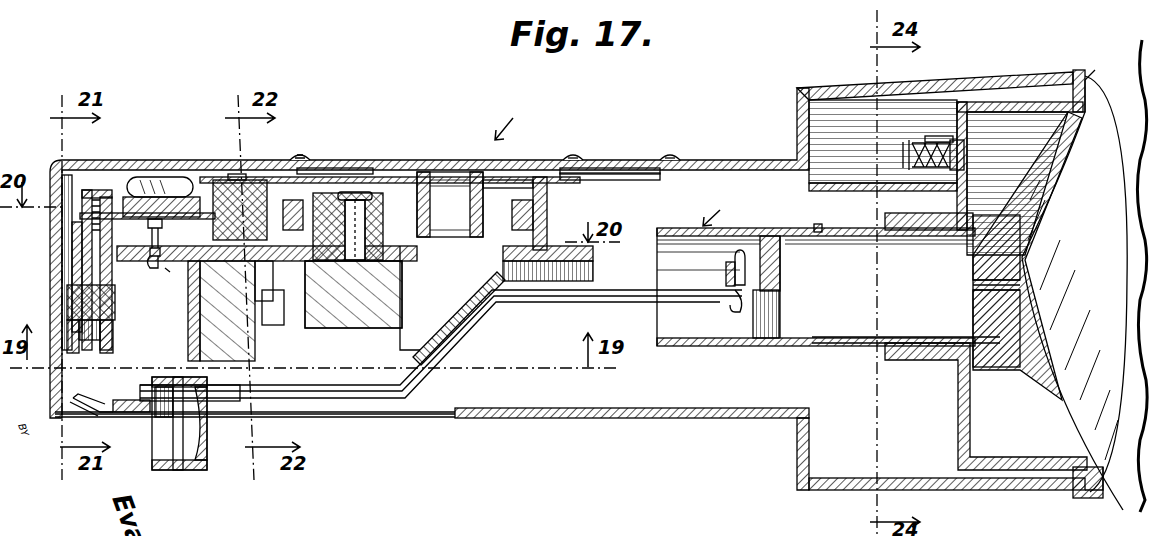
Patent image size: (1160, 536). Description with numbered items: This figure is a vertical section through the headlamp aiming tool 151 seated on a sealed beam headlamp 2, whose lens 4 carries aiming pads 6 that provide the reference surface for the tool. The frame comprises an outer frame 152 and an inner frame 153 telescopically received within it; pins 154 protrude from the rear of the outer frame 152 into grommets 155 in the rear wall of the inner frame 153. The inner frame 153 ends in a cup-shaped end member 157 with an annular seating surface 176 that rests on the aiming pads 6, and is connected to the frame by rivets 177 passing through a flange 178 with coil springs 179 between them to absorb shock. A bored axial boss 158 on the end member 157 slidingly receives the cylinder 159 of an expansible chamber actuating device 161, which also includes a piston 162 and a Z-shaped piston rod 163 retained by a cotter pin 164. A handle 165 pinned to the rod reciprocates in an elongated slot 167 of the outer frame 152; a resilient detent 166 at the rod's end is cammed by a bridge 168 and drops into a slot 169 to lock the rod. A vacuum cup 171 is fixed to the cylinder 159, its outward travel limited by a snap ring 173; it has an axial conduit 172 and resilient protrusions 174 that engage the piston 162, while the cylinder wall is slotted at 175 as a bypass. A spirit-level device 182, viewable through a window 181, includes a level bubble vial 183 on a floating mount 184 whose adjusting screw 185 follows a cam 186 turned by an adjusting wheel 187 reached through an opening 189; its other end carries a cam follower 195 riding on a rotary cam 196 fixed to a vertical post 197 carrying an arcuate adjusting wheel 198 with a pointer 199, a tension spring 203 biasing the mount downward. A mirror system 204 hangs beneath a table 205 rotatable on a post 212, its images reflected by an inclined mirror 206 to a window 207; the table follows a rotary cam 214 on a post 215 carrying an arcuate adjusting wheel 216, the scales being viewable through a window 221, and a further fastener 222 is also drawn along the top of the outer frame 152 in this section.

The sealed beam headlamp 2 is at (1138, 52).
The lens 4 is at (1070, 430).
The aiming pads 6 is at (1092, 88).
The headlamp aiming tool 151 is at (534, 118).
The outer frame 152 is at (528, 420).
The inner frame 153 is at (815, 183).
The pins 154 is at (58, 228).
The grommets 155 is at (80, 190).
The cup-shaped end member 157 is at (1000, 120).
The bored axial boss 158 is at (900, 360).
The cylinder 159 is at (685, 346).
The expansible chamber actuating device 161 is at (816, 272).
The piston 162 is at (782, 270).
The piston rod 163 is at (760, 236).
The cotter pin 164 is at (730, 258).
The handle 165 is at (195, 470).
The resilient detent 166 is at (78, 396).
The elongated slot 167 is at (355, 420).
The bridge 168 is at (122, 414).
The slot 169 is at (78, 416).
The vacuum cup 171 is at (1030, 185).
The axial conduit 172 is at (973, 285).
The snap ring 173 is at (818, 224).
The resilient protrusions 174 is at (973, 257).
The slot 175 is at (918, 337).
The annular seating surface 176 is at (1078, 72).
The rivets 177 is at (975, 153).
The flange 178 is at (958, 130).
The coil springs 179 is at (922, 141).
The window 181 is at (140, 213).
The spirit-level device 182 is at (150, 177).
The level bubble vial 183 is at (175, 197).
The floating mount 184 is at (150, 262).
The adjusting screw 185 is at (97, 200).
The cam 186 is at (113, 342).
The adjusting wheel 187 is at (60, 262).
The opening 189 is at (60, 298).
The cam follower 195 is at (245, 175).
The rotary cam 196 is at (262, 180).
The vertical post 197 is at (205, 270).
The arcuate adjusting wheel 198 is at (330, 193).
The pointer 199 is at (348, 177).
The tension spring 203 is at (165, 275).
The mirror system 204 is at (330, 336).
The table 205 is at (318, 261).
The inclined mirror 206 is at (478, 300).
The window 207 is at (435, 172).
The post 212 is at (362, 262).
The rotary cam 214 is at (565, 250).
The post 215 is at (547, 210).
The arcuate adjusting wheel 216 is at (566, 160).
The window 221 is at (372, 168).
The screw 222 is at (640, 168).